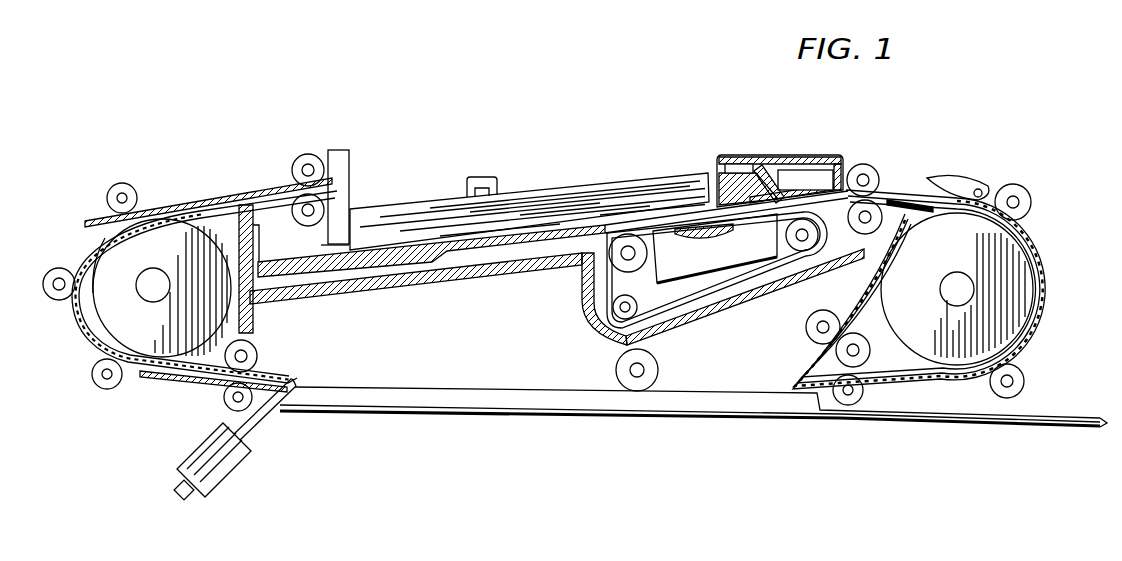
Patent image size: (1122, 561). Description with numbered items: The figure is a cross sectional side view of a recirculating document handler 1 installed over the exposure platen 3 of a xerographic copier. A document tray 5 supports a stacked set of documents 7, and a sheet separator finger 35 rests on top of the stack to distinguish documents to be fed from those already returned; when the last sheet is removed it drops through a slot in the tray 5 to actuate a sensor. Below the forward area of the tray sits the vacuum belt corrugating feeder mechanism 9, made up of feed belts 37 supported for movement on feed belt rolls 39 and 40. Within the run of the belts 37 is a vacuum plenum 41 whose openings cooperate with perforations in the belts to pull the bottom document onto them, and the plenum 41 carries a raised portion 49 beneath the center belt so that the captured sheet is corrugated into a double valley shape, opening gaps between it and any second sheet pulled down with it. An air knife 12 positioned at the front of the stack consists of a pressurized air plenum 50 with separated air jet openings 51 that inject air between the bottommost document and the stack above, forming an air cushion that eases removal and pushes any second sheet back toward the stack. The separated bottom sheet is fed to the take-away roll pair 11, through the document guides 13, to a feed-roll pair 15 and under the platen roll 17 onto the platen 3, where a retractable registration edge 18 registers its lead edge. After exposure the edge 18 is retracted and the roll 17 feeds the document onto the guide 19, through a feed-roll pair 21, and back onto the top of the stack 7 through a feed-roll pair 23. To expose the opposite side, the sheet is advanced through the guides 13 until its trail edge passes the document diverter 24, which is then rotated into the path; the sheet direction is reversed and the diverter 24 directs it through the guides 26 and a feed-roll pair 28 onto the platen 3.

The document handler 1 is at (497, 143).
The exposure platen 3 is at (517, 403).
The document tray 5 is at (437, 262).
The stacked set of documents 7 is at (630, 183).
The vacuum belt corrugating feeder mechanism 9 is at (698, 333).
The take-away roll pair 11 is at (868, 176).
The air knife 12 is at (737, 152).
The document guides 13 is at (985, 222).
The feed-roll pair 15 is at (860, 389).
The platen roll 17 is at (618, 367).
The retractable registration edge 18 is at (283, 410).
The guide 19 is at (173, 367).
The feed-roll pair 21 is at (217, 383).
The feed-roll pair 23 is at (290, 172).
The document diverter 24 is at (960, 180).
The guides 26 is at (882, 297).
The feed-roll pair 28 is at (823, 350).
The sheet separator finger 35 is at (470, 177).
The feed belts 37 is at (797, 262).
The feed belt roll 39 is at (615, 257).
The feed belt roll 40 is at (817, 237).
The vacuum plenum 41 is at (742, 260).
The raised portion 49 is at (705, 236).
The pressurized air plenum 50 is at (803, 178).
The air jet openings 51 is at (740, 167).